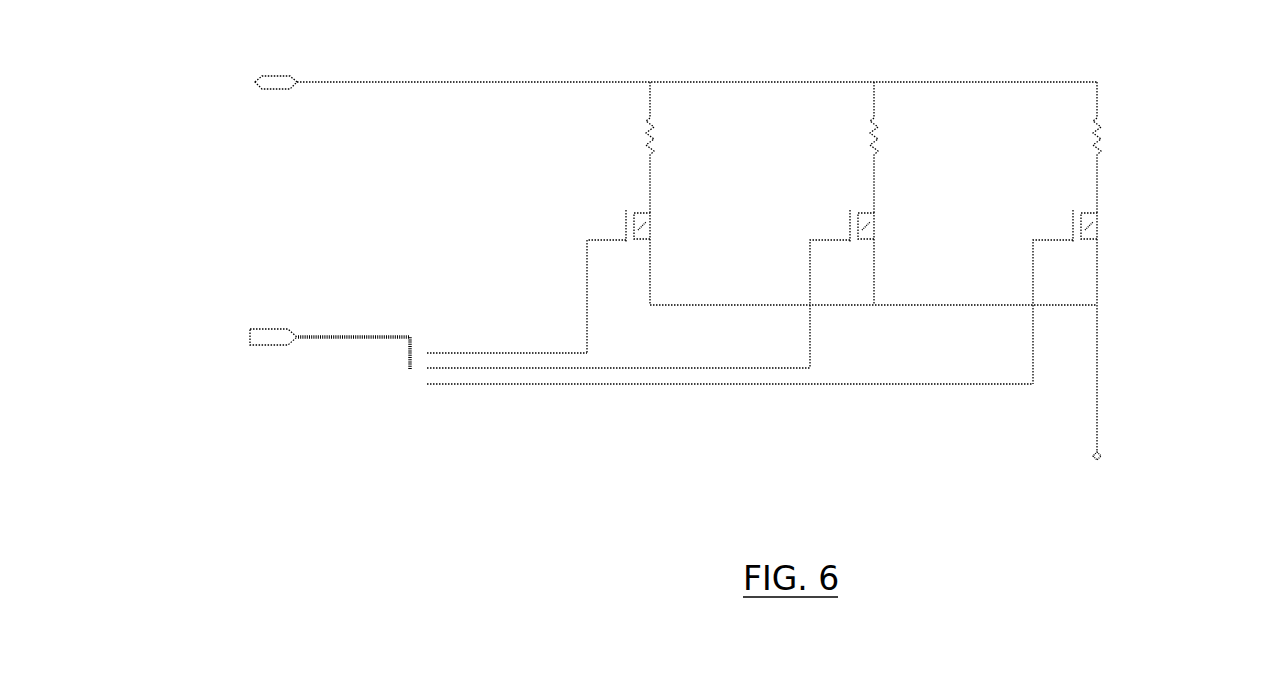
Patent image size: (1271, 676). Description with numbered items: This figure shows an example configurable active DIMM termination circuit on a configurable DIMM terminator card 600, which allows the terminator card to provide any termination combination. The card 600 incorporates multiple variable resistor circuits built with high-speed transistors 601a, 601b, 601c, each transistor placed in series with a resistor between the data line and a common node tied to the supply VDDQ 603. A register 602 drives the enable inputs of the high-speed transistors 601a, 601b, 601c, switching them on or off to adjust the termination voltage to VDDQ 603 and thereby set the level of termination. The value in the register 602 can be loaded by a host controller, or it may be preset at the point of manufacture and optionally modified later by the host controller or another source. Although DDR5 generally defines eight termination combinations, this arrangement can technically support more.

The configurable DIMM terminator card 600 is at (720, 262).
The high-speed transistor 601a is at (735, 218).
The high-speed transistor 601b is at (930, 220).
The high-speed transistor 601c is at (1172, 220).
The register 602 is at (268, 357).
The VDDQ 603 is at (1097, 406).